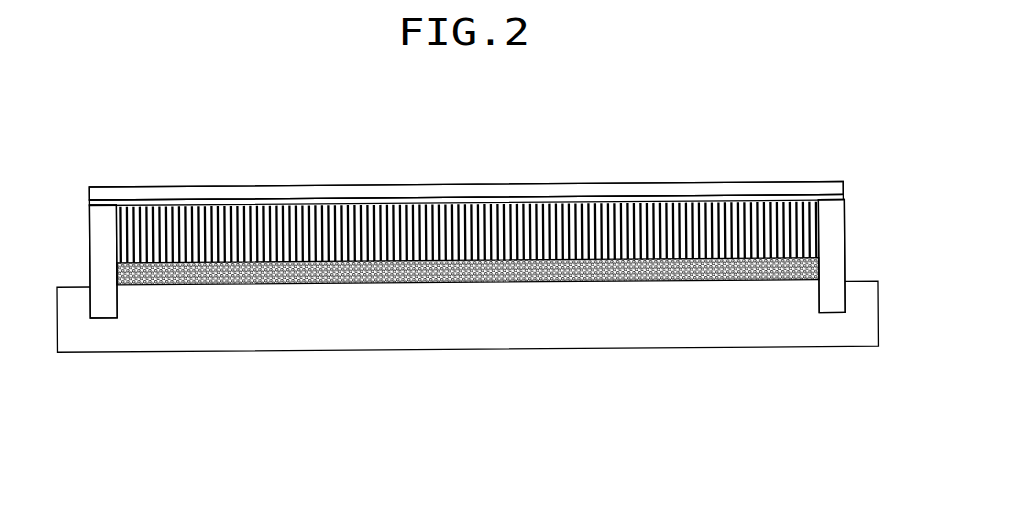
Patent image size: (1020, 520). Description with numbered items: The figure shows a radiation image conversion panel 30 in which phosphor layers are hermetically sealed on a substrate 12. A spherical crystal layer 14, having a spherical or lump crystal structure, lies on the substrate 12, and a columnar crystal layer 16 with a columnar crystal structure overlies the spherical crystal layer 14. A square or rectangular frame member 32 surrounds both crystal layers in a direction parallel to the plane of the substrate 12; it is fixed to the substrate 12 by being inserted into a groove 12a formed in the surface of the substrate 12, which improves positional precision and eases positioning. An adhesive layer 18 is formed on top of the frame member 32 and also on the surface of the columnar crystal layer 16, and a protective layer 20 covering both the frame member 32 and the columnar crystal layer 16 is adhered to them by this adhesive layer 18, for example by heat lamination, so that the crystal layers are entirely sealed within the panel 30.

The conversion panel 30 is at (776, 133).
The protective layer 20 is at (833, 188).
The adhesive layer 18 is at (838, 198).
The columnar crystal layer 16 is at (118, 228).
The spherical crystal layer 14 is at (117, 271).
The frame member 32 is at (835, 245).
The substrate 12 is at (865, 316).
The groove 12a is at (104, 323).